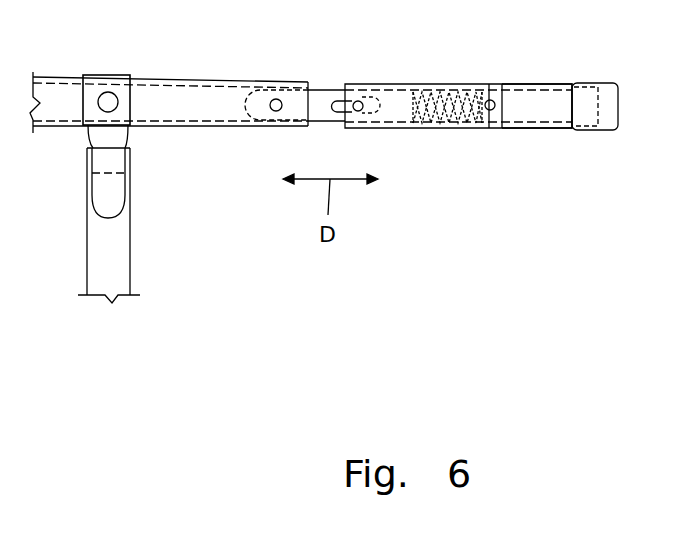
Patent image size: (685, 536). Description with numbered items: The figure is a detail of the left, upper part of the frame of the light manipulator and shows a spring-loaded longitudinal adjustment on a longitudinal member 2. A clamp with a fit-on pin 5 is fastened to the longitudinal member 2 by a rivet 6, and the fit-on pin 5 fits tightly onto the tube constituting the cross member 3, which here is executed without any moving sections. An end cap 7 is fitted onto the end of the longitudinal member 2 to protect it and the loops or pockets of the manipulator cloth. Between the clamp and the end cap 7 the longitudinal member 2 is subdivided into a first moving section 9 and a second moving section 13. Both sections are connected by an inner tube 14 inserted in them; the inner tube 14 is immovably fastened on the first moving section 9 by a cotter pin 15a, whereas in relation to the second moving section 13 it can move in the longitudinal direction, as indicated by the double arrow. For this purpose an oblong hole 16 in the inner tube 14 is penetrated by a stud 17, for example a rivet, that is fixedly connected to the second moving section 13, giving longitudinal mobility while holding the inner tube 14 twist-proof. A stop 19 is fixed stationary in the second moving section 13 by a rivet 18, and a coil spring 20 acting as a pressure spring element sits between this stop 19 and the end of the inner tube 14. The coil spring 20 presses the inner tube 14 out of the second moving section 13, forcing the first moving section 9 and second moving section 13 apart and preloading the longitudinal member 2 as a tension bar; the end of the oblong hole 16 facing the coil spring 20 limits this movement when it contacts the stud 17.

The longitudinal member 2 is at (48, 92).
The cross member 3 is at (104, 237).
The fit-on pin 5 is at (112, 172).
The rivet 6 is at (112, 97).
The end cap 7 is at (607, 102).
The first moving section 9 is at (237, 91).
The second moving section 13 is at (547, 128).
The inner tube 14 is at (330, 89).
The cotter pin 15a is at (272, 110).
The oblong hole 16 is at (387, 83).
The stud 17 is at (355, 109).
The rivet 18 is at (490, 100).
The stop 19 is at (489, 128).
The coil spring 20 is at (441, 128).